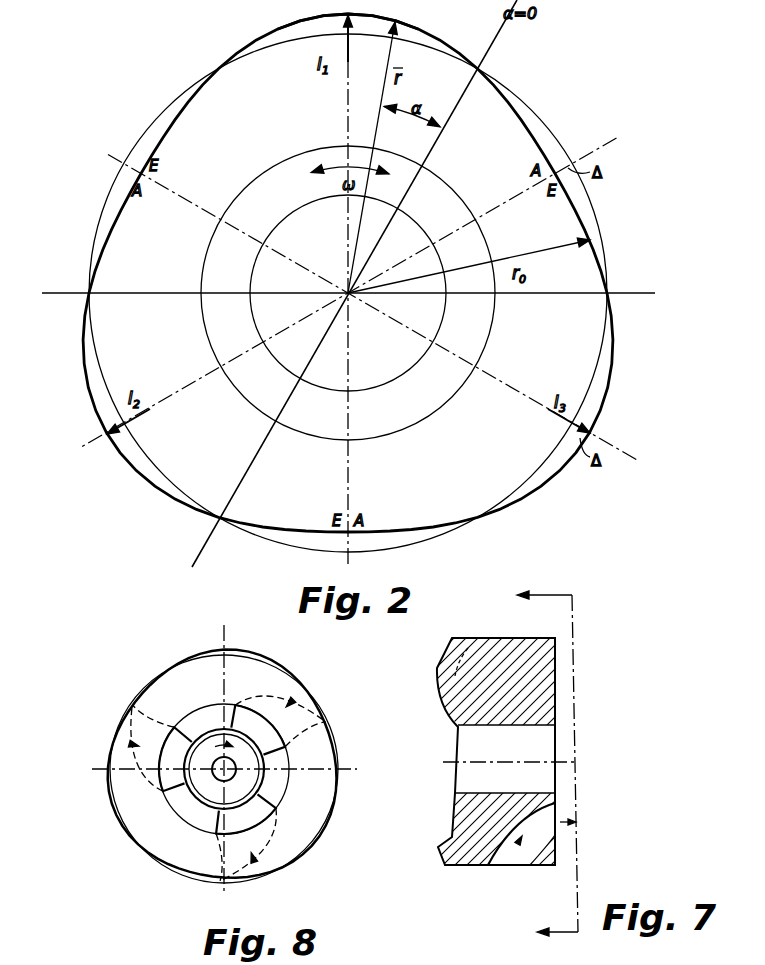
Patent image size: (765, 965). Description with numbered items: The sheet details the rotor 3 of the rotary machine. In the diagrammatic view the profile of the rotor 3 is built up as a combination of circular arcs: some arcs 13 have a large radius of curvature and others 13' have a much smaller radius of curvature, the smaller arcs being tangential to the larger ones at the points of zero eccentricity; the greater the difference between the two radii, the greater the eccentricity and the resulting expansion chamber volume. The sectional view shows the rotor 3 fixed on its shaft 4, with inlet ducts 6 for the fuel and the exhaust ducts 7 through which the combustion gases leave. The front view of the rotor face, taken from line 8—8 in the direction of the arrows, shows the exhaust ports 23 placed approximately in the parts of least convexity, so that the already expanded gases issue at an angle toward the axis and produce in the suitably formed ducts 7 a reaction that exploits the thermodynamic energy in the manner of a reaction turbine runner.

In FIG. 8, the rotor 3 is at (253, 672).
In FIG. 7, the rotor 3 is at (542, 678).
In FIG. 8, the shaft 4 is at (240, 783).
In FIG. 7, the shaft 4 is at (545, 773).
In FIG. 7, the inlet ducts for the fuel 6 is at (452, 670).
In FIG. 8, the exhaust ducts 7 is at (132, 705).
In FIG. 7, the exhaust ducts 7 is at (543, 833).
In FIG. 7, the section line 8— 8 is at (540, 764).
In FIG. 2, the circular arcs with large radius of curvature 13 is at (348, 273).
In FIG. 8, the circular arcs with large radius of curvature 13 is at (221, 757).
In FIG. 2, the circular arcs with smaller radius of curvature 13' is at (321, 14).
In FIG. 8, the exhaust ports 23 is at (173, 727).
In FIG. 7, the exhaust ports 23 is at (530, 810).